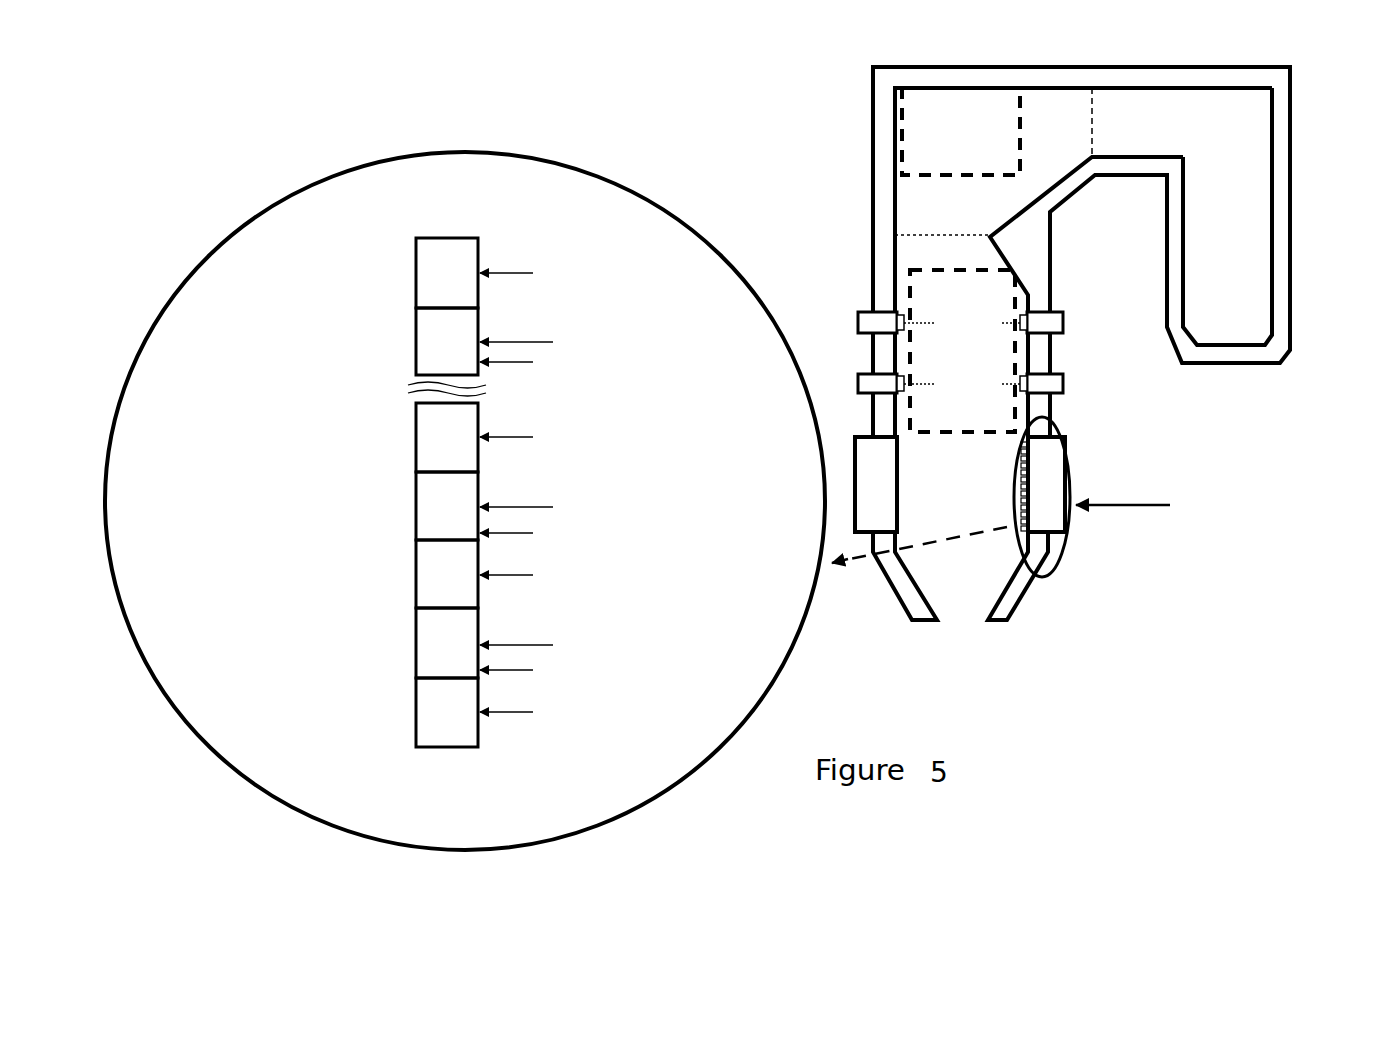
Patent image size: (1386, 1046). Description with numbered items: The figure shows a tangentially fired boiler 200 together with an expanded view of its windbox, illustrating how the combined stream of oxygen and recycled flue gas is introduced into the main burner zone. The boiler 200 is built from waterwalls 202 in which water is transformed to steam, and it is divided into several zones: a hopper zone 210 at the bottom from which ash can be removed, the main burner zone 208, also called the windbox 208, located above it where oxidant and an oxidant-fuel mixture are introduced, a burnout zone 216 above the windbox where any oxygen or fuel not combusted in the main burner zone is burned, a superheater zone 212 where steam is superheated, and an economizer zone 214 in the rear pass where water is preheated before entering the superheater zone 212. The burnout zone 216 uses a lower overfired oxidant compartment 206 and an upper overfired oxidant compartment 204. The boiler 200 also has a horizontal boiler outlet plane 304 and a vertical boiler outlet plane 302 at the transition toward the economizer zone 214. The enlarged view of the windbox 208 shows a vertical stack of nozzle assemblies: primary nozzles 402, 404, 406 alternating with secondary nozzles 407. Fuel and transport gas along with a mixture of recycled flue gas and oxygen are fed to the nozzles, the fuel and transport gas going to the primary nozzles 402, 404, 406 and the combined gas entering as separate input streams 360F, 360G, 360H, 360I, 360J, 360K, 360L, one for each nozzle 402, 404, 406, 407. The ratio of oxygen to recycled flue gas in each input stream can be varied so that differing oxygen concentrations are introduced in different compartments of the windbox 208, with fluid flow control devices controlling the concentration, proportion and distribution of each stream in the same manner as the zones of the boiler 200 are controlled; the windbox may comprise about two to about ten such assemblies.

The boiler 200 is at (954, 62).
The waterwalls 202 is at (1052, 245).
The upper overfired oxidant compartment 204 is at (1065, 324).
The lower overfired oxidant compartment 206 is at (1066, 385).
The main burner zone (windbox) 208 is at (1074, 458).
The hopper zone 210 is at (1032, 598).
The superheater zone 212 is at (904, 128).
The economizer zone 214 is at (1258, 280).
The burnout zone 216 is at (1015, 305).
The vertical boiler outlet plane 302 is at (1098, 96).
The horizontal boiler outlet plane 304 is at (904, 222).
The input stream 360L is at (510, 270).
The input stream 360K is at (518, 364).
The input stream 360J is at (518, 440).
The input stream 360I is at (518, 536).
The input stream 360H is at (518, 578).
The input stream 360G is at (518, 672).
The input stream 360F is at (515, 715).
The primary nozzle 402 is at (349, 646).
The primary nozzle 404 is at (349, 506).
The primary nozzle 406 is at (353, 341).
The secondary nozzle 407 is at (357, 499).